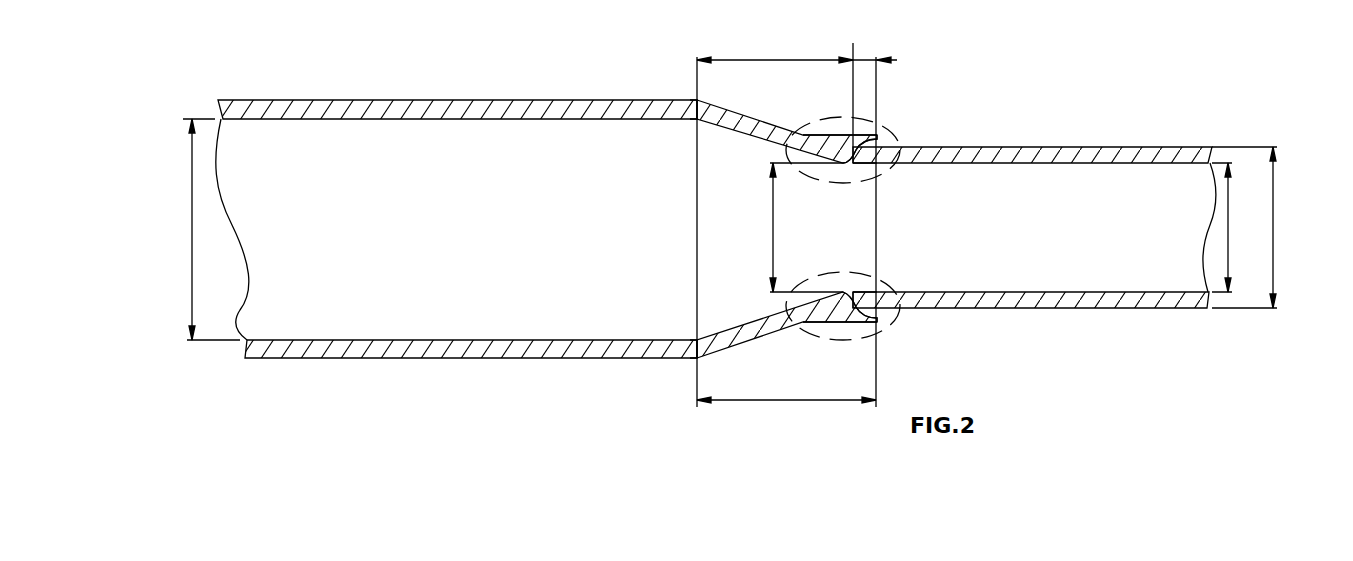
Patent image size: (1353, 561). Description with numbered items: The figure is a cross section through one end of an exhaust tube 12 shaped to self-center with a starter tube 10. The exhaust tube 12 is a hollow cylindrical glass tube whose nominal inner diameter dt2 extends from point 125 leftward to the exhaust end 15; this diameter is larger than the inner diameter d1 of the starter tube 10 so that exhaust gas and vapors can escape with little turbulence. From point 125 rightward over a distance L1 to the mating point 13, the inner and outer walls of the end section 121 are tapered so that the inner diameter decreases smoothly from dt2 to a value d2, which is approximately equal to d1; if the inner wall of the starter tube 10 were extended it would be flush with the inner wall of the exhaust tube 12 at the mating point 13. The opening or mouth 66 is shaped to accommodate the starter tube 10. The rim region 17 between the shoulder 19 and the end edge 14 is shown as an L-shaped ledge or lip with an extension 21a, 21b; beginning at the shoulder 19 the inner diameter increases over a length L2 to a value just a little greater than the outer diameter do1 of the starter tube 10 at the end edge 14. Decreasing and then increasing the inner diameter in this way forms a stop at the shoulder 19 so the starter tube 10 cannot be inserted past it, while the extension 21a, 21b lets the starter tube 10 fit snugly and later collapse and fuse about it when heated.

The starter tube 10 is at (1100, 308).
The exhaust tube 12 is at (452, 360).
The mating point 13 is at (853, 43).
The end edge 14 is at (877, 88).
The exhaust end 15 is at (252, 275).
The rim region 17 is at (880, 165).
The shoulder 19 is at (832, 134).
The extension 21a is at (848, 315).
The extension 21b is at (872, 125).
The opening 66 is at (823, 213).
The end section 121 is at (783, 403).
The point 125 is at (697, 120).
The taper length L1 is at (782, 60).
The extension length L2 is at (864, 60).
The inner diameter of starter tube d1 is at (1228, 225).
The reduced inner diameter of exhaust tube d2 is at (773, 222).
The nominal inner diameter of exhaust tube dt2 is at (192, 232).
The outer diameter of starter tube do1 is at (1273, 228).